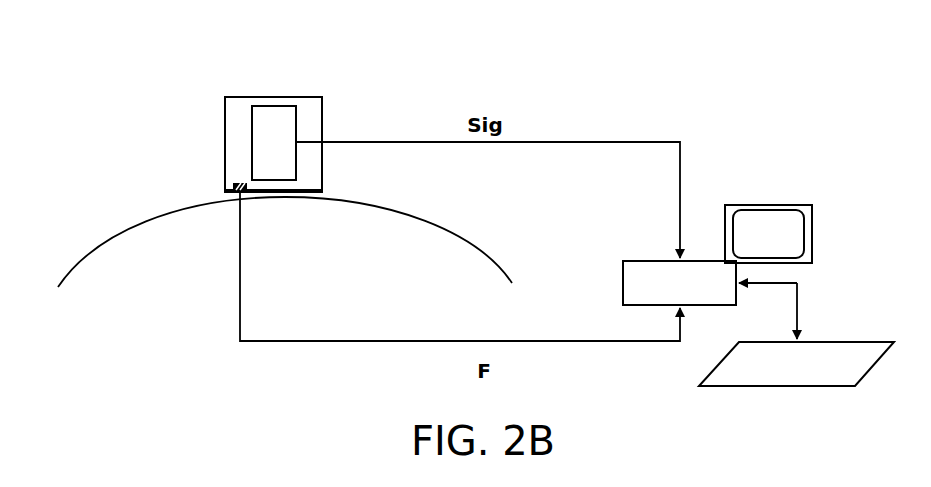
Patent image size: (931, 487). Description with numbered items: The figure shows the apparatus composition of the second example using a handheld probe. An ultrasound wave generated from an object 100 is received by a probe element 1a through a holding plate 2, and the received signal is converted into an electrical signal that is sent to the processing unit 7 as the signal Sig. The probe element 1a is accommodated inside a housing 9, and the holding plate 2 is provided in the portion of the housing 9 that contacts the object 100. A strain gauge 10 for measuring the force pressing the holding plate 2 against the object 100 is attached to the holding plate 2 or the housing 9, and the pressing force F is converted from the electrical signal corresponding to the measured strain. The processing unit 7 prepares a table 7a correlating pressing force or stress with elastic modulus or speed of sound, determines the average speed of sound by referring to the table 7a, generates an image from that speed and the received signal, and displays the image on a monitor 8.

The housing 9 is at (227, 133).
The probe element 1a is at (287, 117).
The holding plate 2 is at (313, 190).
The strain gauge 10 is at (240, 187).
The object 100 is at (142, 255).
The processing unit 7 is at (679, 283).
The table 7a is at (796, 364).
The monitor 8 is at (760, 220).